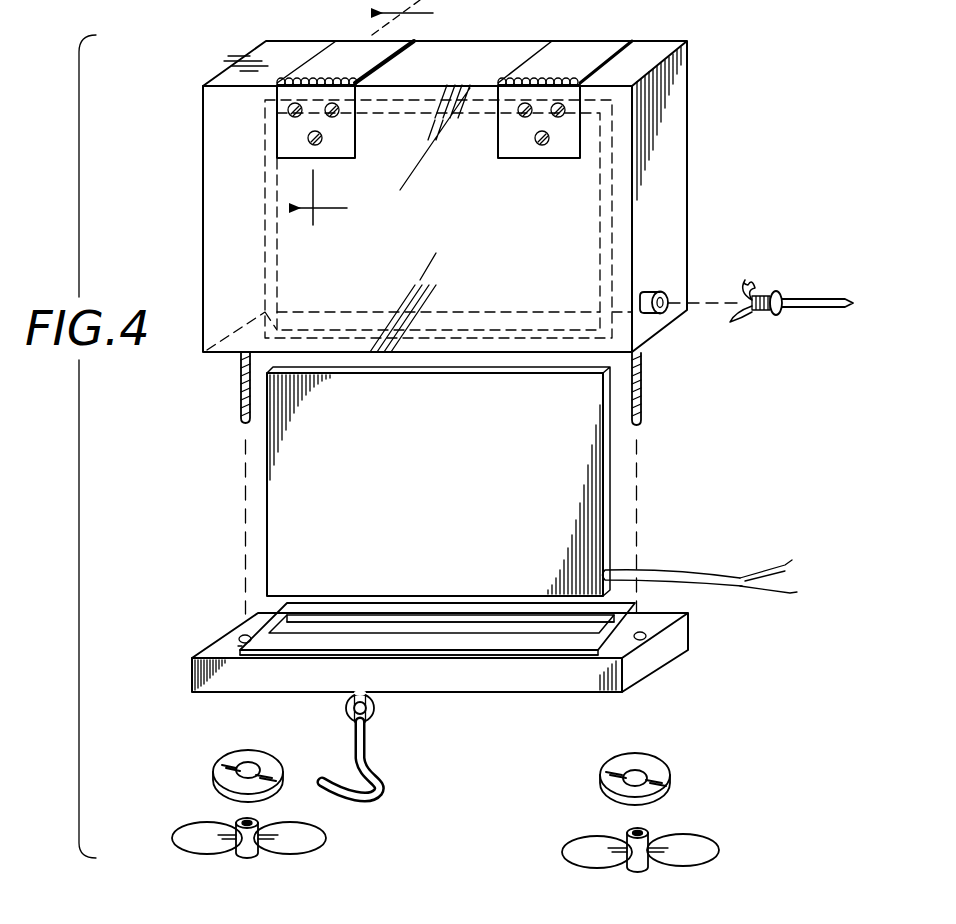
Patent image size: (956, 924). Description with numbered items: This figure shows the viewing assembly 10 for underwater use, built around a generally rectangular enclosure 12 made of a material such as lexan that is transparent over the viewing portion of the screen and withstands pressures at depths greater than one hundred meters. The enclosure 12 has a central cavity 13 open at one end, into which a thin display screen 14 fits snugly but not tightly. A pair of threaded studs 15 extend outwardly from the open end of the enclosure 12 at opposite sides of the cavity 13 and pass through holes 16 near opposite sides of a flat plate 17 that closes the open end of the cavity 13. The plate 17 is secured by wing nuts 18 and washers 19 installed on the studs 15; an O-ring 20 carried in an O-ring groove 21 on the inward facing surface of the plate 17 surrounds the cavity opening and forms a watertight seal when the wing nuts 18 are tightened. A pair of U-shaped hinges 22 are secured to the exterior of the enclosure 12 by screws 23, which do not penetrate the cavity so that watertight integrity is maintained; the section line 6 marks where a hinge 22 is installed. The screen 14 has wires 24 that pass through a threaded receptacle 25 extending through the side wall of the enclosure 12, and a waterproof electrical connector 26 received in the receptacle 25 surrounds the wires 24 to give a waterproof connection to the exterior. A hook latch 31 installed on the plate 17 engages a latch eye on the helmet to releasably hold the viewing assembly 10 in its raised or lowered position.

The section line 6- 6 is at (372, 112).
The viewing assembly 10 is at (694, 98).
The enclosure 12 is at (670, 175).
The central cavity 13 is at (272, 266).
The display screen 14 is at (290, 482).
The threaded studs 15 is at (239, 392).
The holes 16 is at (245, 634).
The flat plate 17 is at (678, 630).
The wing nuts 18 is at (313, 836).
The washers 19 is at (215, 772).
The O-ring 20 is at (497, 630).
The O-ring groove 21 is at (240, 646).
The U-shaped hinges 22 is at (334, 50).
The screws 23 is at (312, 137).
The wires 24 is at (685, 572).
The threaded receptacle 25 is at (659, 291).
The waterproof electrical connector 26 is at (772, 292).
The hook latch 31 is at (366, 745).